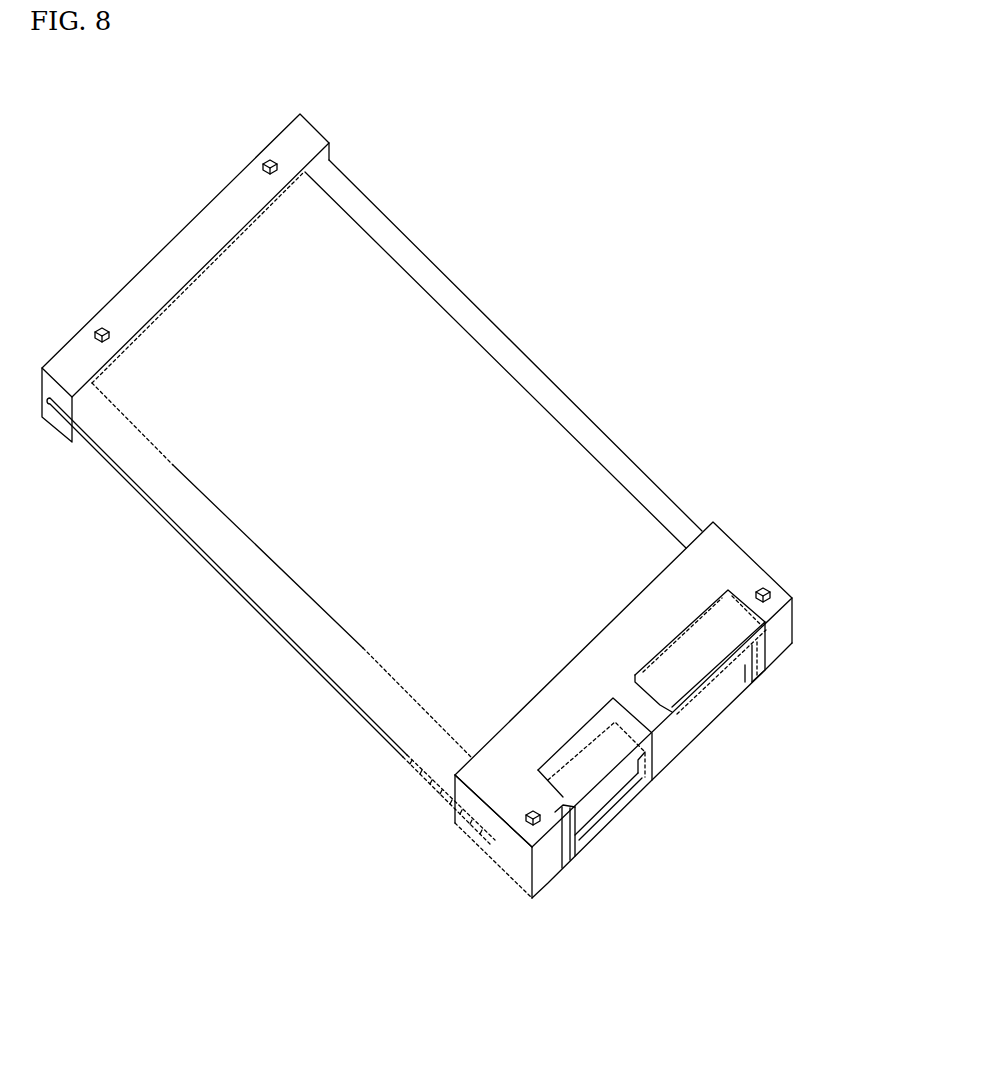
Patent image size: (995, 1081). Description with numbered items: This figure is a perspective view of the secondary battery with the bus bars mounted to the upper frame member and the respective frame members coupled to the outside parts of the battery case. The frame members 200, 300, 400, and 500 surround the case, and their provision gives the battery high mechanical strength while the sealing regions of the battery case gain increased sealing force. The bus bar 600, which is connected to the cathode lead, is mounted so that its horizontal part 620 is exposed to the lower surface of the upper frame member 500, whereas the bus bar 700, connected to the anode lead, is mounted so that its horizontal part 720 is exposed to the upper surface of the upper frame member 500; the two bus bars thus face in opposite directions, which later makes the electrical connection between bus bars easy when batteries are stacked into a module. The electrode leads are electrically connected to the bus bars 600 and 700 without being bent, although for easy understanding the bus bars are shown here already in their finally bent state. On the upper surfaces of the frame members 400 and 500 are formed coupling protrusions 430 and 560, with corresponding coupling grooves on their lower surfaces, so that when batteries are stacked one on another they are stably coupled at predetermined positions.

The frame member 200 is at (270, 607).
The frame member 300 is at (525, 370).
The lower frame member 400 is at (165, 272).
The coupling protrusion 430 is at (268, 160).
The upper frame member 500 is at (745, 540).
The coupling protrusion 560 is at (513, 877).
The bus bar 600 is at (632, 800).
The horizontal part 620 is at (623, 868).
The bus bar 700 is at (722, 691).
The horizontal part 720 is at (768, 652).